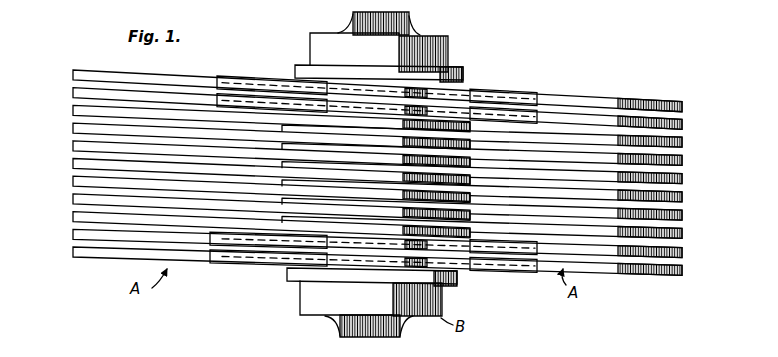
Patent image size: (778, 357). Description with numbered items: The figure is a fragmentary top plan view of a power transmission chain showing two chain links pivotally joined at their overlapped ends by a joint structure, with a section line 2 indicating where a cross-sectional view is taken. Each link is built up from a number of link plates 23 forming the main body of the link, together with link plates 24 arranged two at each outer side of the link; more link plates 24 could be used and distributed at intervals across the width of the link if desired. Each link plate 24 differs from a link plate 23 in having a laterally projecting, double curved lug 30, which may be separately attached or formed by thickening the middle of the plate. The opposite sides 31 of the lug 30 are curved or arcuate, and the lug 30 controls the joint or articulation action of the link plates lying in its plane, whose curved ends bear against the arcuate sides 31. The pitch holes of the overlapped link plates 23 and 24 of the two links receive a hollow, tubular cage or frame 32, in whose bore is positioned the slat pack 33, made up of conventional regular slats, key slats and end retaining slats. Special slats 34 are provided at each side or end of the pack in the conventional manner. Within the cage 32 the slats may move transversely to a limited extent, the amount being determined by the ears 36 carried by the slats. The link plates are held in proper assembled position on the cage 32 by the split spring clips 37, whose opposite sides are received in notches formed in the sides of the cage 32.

The section line 2- 2 is at (380, 9).
The link plate 23 is at (73, 217).
The link plate 24 is at (73, 92).
The lug 30 is at (250, 256).
The sides of the lug 31 is at (210, 238).
The cage 32 is at (310, 40).
The slat pack 33 is at (350, 338).
The special slats 34 is at (342, 26).
The ears 36 is at (295, 72).
The split spring clips 37 is at (463, 70).